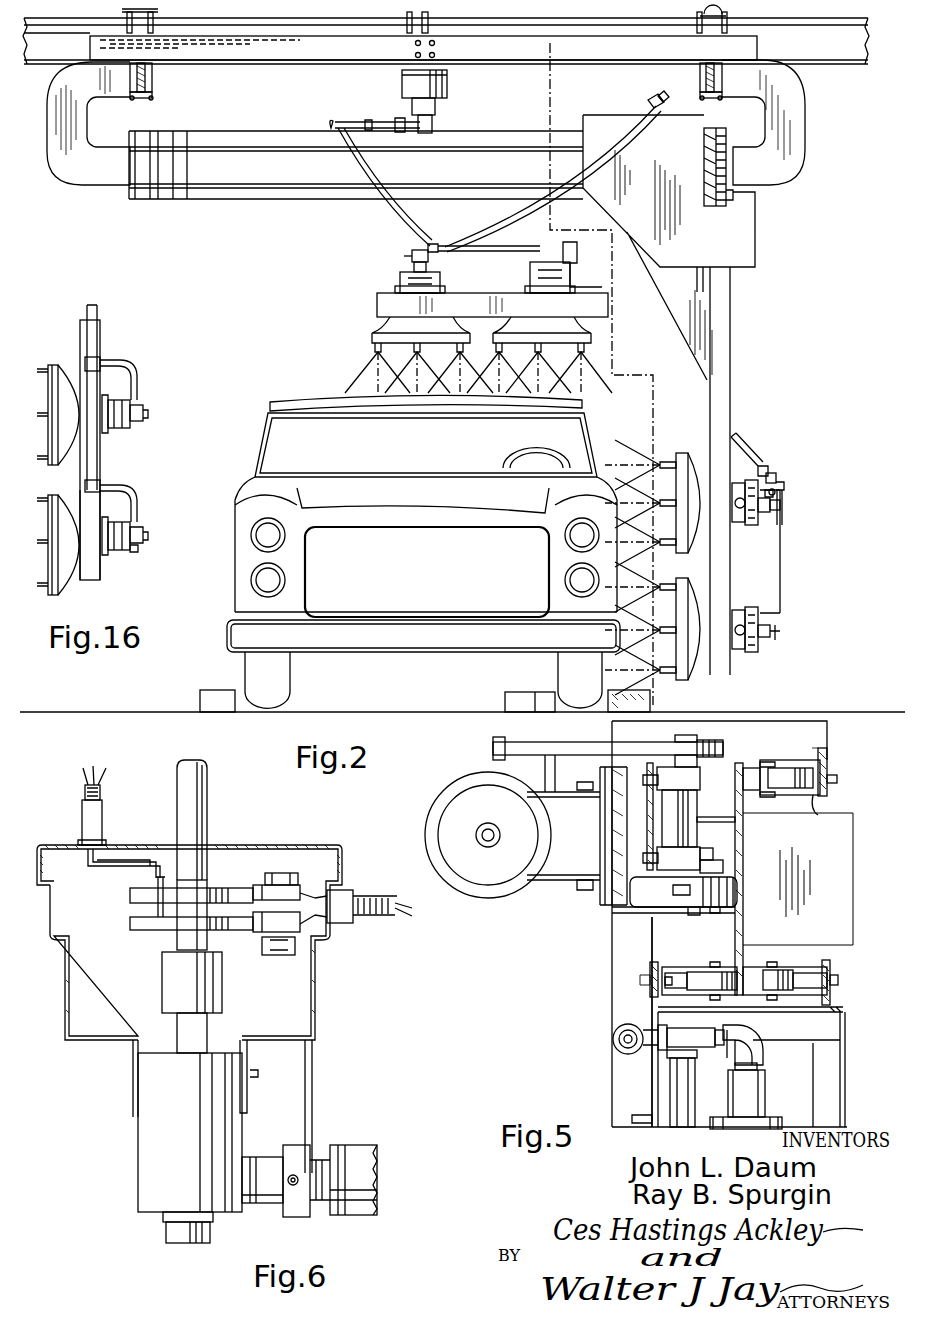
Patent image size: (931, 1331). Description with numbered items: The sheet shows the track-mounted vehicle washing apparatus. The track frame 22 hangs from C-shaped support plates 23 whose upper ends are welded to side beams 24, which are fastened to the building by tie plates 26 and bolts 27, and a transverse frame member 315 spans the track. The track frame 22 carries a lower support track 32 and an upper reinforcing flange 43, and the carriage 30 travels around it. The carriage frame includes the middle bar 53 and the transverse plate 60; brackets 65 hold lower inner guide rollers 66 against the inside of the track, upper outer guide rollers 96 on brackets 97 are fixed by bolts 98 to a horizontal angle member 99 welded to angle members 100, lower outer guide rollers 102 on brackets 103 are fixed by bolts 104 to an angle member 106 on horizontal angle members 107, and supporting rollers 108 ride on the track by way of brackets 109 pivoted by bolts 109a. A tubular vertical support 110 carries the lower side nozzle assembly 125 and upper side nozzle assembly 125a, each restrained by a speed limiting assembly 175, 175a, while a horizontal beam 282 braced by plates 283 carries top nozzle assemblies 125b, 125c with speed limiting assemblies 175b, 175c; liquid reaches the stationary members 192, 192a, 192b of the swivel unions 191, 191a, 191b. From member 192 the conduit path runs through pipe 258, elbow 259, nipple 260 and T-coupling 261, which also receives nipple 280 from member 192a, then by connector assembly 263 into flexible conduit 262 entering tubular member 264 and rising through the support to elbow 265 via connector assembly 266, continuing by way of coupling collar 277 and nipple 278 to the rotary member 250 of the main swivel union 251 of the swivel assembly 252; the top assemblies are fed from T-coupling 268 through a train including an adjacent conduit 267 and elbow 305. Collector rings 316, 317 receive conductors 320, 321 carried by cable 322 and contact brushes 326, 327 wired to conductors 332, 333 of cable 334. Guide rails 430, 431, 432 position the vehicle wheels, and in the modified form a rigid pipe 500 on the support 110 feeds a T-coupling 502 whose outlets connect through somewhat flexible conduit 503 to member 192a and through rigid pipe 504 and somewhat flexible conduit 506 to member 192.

In FIG. 2, the track frame 22 is at (100, 196).
In FIG. 2, the C-shaped support plates 23 is at (798, 135).
In FIG. 2, the side beams 24 is at (152, 75).
In FIG. 2, the tie plates 26 is at (122, 14).
In FIG. 2, the bolts 27 is at (155, 90).
In FIG. 2, the carriage 30 is at (762, 214).
In FIG. 2, the lower support track 32 is at (262, 195).
In FIG. 2, the upper reinforcing flange 43 is at (220, 140).
In FIG. 2, the transverse frame member 315 is at (268, 60).
In FIG. 6, the electrical conductor 332 is at (388, 902).
In FIG. 2, the cable 334 is at (395, 105).
In FIG. 6, the cable 334 is at (345, 892).
In FIG. 2, the rotary member 250 is at (438, 124).
In FIG. 2, the main swivel union 251 is at (440, 108).
In FIG. 2, the swivel assembly 252 is at (452, 80).
In FIG. 2, the horizontal beam 282 is at (377, 305).
In FIG. 2, the brace plates 283 is at (730, 325).
In FIG. 2, the speed limiting assembly 175b is at (395, 275).
In FIG. 2, the speed limiting assembly 175c is at (525, 280).
In FIG. 2, the speed limiting assembly 175a is at (748, 540).
In FIG. 2, the speed limiting assembly 175 is at (752, 658).
In FIG. 2, the swivel union 191b is at (434, 244).
In FIG. 2, the fixed member 192b is at (410, 256).
In FIG. 2, the nozzle assembly 125b is at (372, 330).
In FIG. 2, the nozzle assembly 125c is at (594, 328).
In FIG. 2, the side nozzle assembly 125a is at (690, 440).
In FIG. 2, the side nozzle assembly 125 is at (700, 676).
In FIG. 2, the guide rail 430 is at (205, 690).
In FIG. 2, the guide rail 431 is at (505, 692).
In FIG. 2, the guide rail 432 is at (650, 696).
In FIG. 2, the pipe 258 is at (782, 596).
In FIG. 2, the elbow 259 is at (784, 497).
In FIG. 2, the fitting 260 is at (780, 488).
In FIG. 2, the T-coupling 261 is at (775, 478).
In FIG. 2, the flexible conduit 262 is at (760, 450).
In FIG. 5, the flexible conduit 262 is at (758, 1117).
In FIG. 2, the connector assembly 263 is at (770, 462).
In FIG. 2, the tubular member 264 is at (738, 436).
In FIG. 2, the nipple 280 is at (775, 497).
In FIG. 2, the swivel union 191a is at (778, 510).
In FIG. 16, the swivel union 191a is at (148, 418).
In FIG. 2, the stationary member 192a is at (766, 514).
In FIG. 16, the stationary member 192a is at (143, 410).
In FIG. 16, the swivel union 191 is at (148, 536).
In FIG. 2, the stationary member 192 is at (768, 637).
In FIG. 16, the stationary member 192 is at (138, 552).
In FIG. 16, the rigid pipe 500 is at (100, 305).
In FIG. 16, the tubular vertical support 110 is at (80, 322).
In FIG. 16, the T-coupling 502 is at (85, 364).
In FIG. 16, the somewhat flexible conduit 503 is at (130, 366).
In FIG. 16, the rigid pipe 504 is at (97, 470).
In FIG. 16, the somewhat flexible conduit 506 is at (85, 486).
In FIG. 6, the cable 322 is at (102, 800).
In FIG. 6, the insulated electric conductor 321 is at (140, 855).
In FIG. 6, the insulated electric conductor 320 is at (110, 868).
In FIG. 6, the collector ring 316 is at (130, 896).
In FIG. 6, the collector ring 317 is at (130, 925).
In FIG. 6, the brush 326 is at (260, 872).
In FIG. 6, the brush 327 is at (258, 935).
In FIG. 6, the electrical conductor 333 is at (395, 916).
In FIG. 6, the coupling collar 277 is at (343, 1148).
In FIG. 6, the nipple 278 is at (260, 1160).
In FIG. 5, the angle members 100 is at (827, 740).
In FIG. 5, the horizontal angle member 99 is at (827, 758).
In FIG. 5, the bolts 98 is at (837, 779).
In FIG. 5, the upper outer guide rollers 96 is at (760, 768).
In FIG. 5, the brackets 97 is at (825, 811).
In FIG. 5, the transverse plate 60 is at (660, 815).
In FIG. 5, the bolts 109a is at (713, 852).
In FIG. 5, the brackets 109 is at (723, 865).
In FIG. 5, the rollers 108 is at (725, 918).
In FIG. 5, the brackets 65 is at (662, 967).
In FIG. 5, the lower inner guide rollers 66 is at (700, 972).
In FIG. 5, the middle bar 53 is at (650, 978).
In FIG. 5, the lower outer guide rollers 102 is at (790, 967).
In FIG. 5, the brackets 103 is at (830, 962).
In FIG. 5, the bolts 104 is at (838, 980).
In FIG. 5, the angle member 106 is at (838, 1005).
In FIG. 5, the horizontal angle members 107 is at (838, 1012).
In FIG. 5, the T-coupling 268 is at (625, 1024).
In FIG. 5, the pipe 267 is at (690, 1030).
In FIG. 5, the elbow 265 is at (745, 1030).
In FIG. 5, the connector assembly 266 is at (765, 1085).
In FIG. 5, the elbow 305 is at (675, 1060).